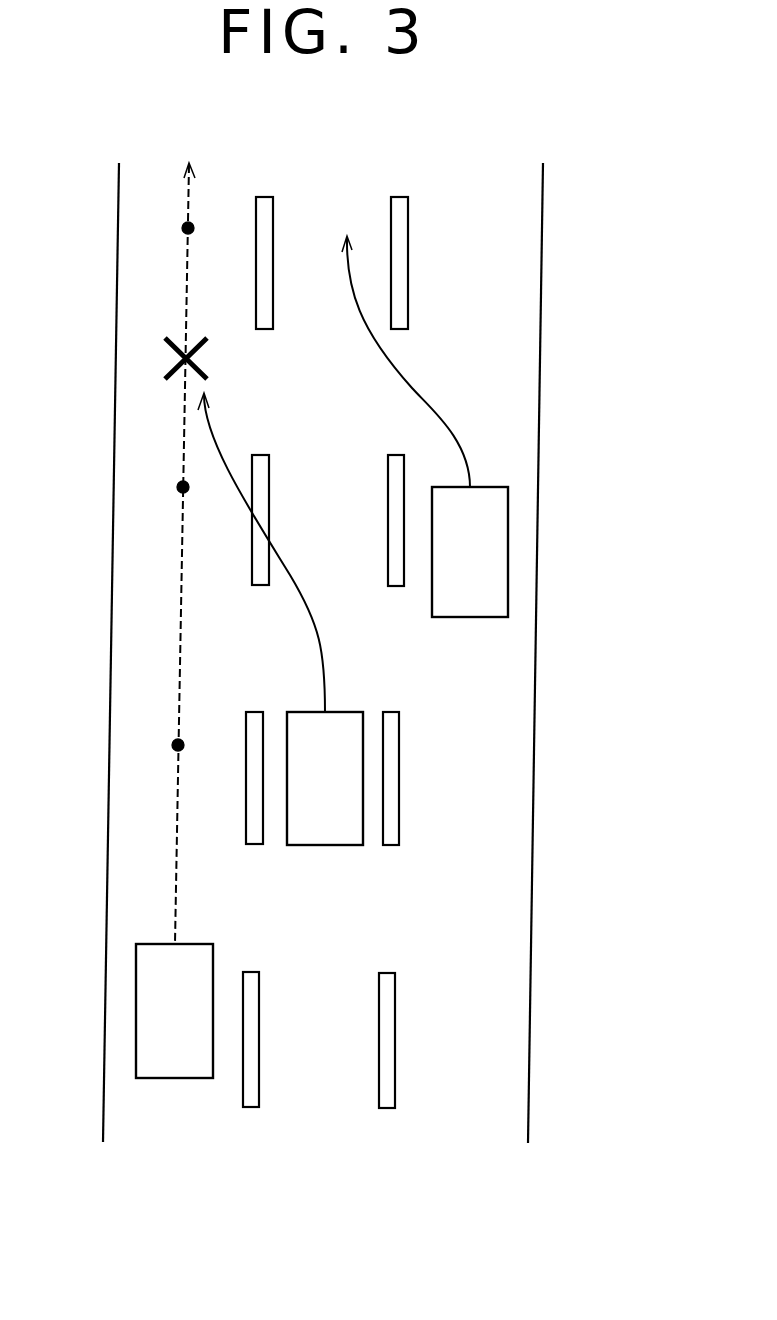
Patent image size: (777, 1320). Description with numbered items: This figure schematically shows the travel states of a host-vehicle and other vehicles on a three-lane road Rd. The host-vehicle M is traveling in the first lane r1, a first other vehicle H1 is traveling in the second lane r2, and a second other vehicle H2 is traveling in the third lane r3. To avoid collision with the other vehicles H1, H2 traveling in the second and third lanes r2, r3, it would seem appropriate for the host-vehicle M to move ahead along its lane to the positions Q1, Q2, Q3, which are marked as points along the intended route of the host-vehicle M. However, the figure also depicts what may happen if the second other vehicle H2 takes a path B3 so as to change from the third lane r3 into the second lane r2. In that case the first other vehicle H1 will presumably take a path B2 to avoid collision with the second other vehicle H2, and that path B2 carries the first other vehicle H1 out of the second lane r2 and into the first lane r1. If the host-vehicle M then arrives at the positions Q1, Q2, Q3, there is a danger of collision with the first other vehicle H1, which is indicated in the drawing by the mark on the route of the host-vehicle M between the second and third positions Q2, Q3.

The three-lane road Rd is at (483, 824).
The first lane r1 is at (205, 1102).
The second lane r2 is at (337, 1102).
The third lane r3 is at (473, 1103).
The host-vehicle M is at (162, 1078).
The first other vehicle H1 is at (313, 845).
The second other vehicle H2 is at (459, 617).
The path B2 is at (282, 565).
The path B3 is at (412, 388).
The position Q1 is at (178, 745).
The position Q2 is at (183, 487).
The position Q3 is at (188, 228).